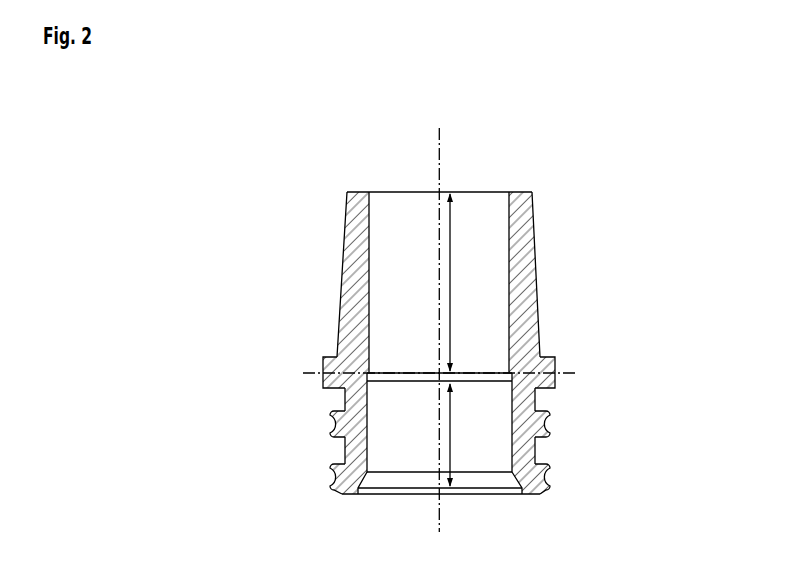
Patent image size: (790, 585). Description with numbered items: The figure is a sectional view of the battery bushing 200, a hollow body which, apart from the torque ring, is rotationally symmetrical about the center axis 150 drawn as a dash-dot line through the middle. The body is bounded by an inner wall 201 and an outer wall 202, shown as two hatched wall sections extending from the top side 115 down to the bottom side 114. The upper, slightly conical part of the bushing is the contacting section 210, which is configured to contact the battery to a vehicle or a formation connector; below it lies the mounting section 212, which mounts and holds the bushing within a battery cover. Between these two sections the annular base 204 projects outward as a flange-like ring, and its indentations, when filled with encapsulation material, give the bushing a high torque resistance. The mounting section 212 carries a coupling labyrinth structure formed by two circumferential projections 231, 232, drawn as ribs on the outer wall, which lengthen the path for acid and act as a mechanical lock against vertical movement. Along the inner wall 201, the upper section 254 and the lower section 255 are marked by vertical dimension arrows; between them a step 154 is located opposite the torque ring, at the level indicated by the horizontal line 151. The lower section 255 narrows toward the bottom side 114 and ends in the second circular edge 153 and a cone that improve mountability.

The battery bushing 200 is at (565, 161).
The outer wall 202 is at (548, 224).
The top side 115 is at (515, 192).
The annular base 204 is at (326, 356).
The circumferential projection 231 is at (327, 423).
The circumferential projection 232 is at (327, 475).
The contacting section 210 is at (530, 272).
The reference plane 151 is at (572, 373).
The mounting section 212 is at (572, 434).
The step 154 is at (482, 373).
The inner wall 201 is at (510, 417).
The second circular edge 153 is at (403, 474).
The bottom side 114 is at (537, 491).
The center axis 150 is at (438, 142).
The upper section 254 is at (450, 282).
The lower section 255 is at (450, 438).